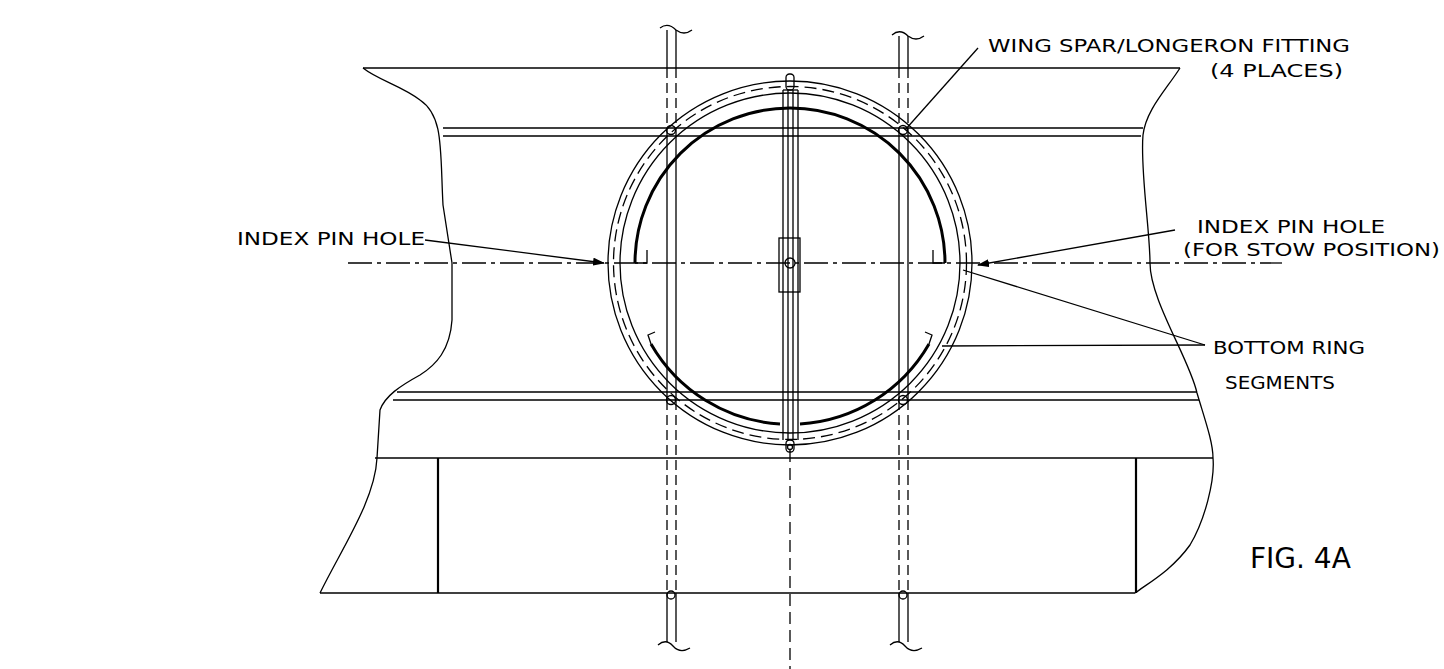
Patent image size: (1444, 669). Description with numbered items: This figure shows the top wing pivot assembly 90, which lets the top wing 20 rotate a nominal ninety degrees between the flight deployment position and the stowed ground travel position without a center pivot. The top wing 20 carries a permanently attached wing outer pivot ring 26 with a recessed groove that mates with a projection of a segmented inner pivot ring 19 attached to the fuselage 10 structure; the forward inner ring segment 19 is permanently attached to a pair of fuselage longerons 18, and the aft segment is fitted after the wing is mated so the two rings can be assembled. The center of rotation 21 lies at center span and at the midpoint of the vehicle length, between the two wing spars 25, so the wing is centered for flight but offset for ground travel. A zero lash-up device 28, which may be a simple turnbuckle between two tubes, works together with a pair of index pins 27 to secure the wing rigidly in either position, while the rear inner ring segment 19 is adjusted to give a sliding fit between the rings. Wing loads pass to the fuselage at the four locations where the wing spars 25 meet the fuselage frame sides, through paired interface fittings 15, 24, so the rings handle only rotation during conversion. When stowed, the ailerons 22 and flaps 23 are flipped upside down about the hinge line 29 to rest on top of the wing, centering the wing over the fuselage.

The fuselage 10 is at (748, 52).
The interface fitting 15 is at (789, 346).
The interface fitting 24 is at (668, 130).
The fuselage longeron 18 is at (668, 52).
The inner ring segment 19 is at (688, 158).
The top wing 20 is at (1097, 192).
The center of rotation 21 is at (800, 258).
The aileron 22 is at (404, 543).
The flap 23 is at (568, 543).
The wing spar 25 is at (560, 133).
The wing outer pivot ring 26 is at (968, 224).
The index pin 27 is at (797, 78).
The zero lash-up device 28 is at (780, 250).
The hinge line 29 is at (375, 458).
The top wing pivot assembly 90 is at (392, 320).